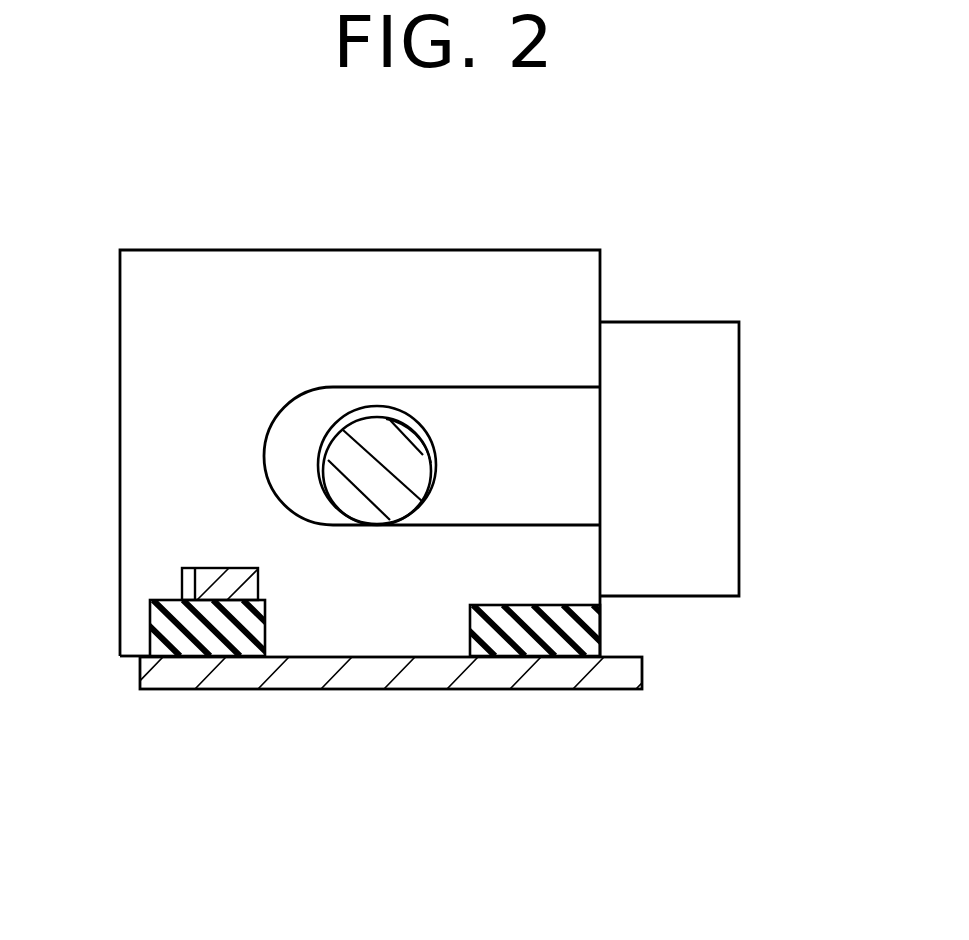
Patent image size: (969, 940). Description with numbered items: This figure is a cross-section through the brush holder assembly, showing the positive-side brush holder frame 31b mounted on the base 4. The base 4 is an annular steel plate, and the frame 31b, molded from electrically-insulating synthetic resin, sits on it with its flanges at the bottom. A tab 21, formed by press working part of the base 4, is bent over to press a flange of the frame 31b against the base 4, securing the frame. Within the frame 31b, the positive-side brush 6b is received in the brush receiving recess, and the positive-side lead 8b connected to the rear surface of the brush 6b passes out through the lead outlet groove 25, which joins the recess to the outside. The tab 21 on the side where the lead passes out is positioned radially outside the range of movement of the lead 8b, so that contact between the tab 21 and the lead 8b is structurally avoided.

The positive-side brush holder frame 31b is at (591, 250).
The lead outlet groove 25 is at (557, 390).
The positive-side lead 8b is at (398, 413).
The positive-side brush 6b is at (740, 421).
The tab 21 is at (217, 590).
The base 4 is at (433, 691).